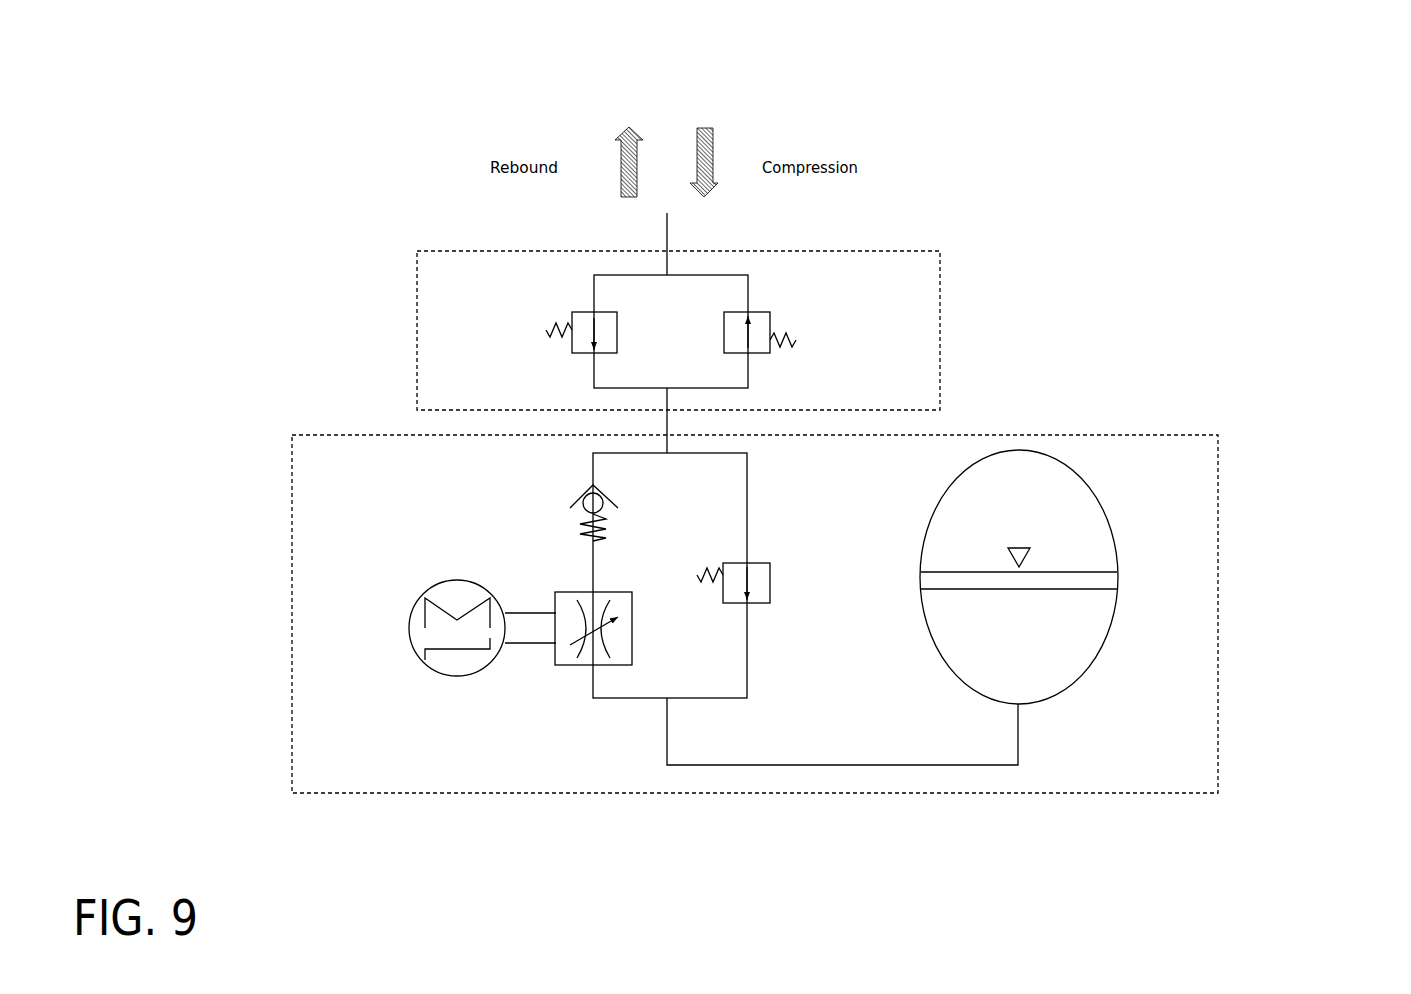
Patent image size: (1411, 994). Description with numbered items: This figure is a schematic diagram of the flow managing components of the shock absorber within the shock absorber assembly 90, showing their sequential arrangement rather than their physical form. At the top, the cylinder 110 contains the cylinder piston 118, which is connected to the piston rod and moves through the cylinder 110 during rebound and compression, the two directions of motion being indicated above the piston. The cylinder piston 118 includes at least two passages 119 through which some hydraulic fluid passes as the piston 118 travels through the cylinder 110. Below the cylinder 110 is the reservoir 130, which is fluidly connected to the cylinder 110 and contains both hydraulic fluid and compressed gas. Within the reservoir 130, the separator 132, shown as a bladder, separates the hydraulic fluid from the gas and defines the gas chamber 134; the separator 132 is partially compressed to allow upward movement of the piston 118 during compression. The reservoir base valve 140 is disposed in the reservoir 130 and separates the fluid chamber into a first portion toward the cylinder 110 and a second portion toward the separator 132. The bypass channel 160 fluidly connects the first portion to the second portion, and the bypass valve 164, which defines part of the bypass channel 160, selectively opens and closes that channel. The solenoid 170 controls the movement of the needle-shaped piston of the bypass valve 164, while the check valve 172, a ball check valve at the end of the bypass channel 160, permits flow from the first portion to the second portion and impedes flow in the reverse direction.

The shock absorber assembly 90 is at (1149, 123).
The cylinder 110 is at (948, 249).
The cylinder piston 118 is at (582, 275).
The passages 119 is at (540, 330).
The reservoir 130 is at (291, 440).
The separator 132 is at (1126, 579).
The gas chamber 134 is at (1044, 496).
The reservoir base valve 140 is at (776, 554).
The bypass channel 160 is at (535, 670).
The bypass valve 164 is at (562, 673).
The solenoid 170 is at (392, 606).
The check valve 172 is at (557, 495).